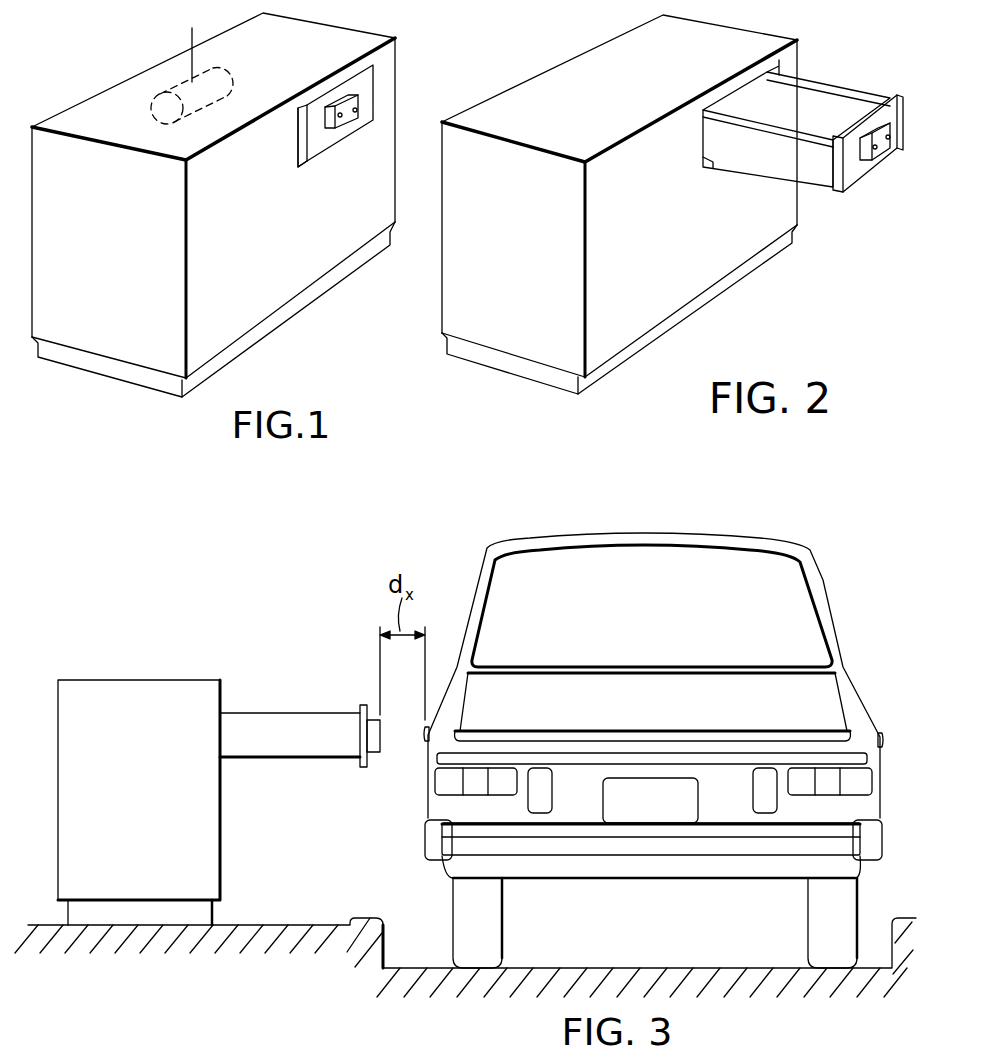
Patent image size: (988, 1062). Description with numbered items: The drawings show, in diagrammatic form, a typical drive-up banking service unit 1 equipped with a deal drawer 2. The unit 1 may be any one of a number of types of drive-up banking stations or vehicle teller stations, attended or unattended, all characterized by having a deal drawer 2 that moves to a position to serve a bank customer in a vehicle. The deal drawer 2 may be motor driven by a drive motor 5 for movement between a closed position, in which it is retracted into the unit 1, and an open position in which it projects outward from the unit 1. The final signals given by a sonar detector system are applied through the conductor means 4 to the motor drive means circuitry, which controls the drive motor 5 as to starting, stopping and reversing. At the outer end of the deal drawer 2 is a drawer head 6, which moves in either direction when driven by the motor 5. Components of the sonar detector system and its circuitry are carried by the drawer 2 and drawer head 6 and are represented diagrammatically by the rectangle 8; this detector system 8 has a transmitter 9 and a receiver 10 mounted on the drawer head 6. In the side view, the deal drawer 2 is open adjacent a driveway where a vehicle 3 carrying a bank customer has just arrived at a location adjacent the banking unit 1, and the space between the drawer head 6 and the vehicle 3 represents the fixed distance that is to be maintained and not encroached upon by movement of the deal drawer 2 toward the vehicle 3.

In FIG. 1, the banking service unit 1 is at (128, 396).
In FIG. 2, the banking service unit 1 is at (763, 278).
In FIG. 3, the banking service unit 1 is at (140, 672).
In FIG. 1, the deal drawer 2 is at (297, 142).
In FIG. 2, the deal drawer 2 is at (772, 157).
In FIG. 3, the deal drawer 2 is at (277, 740).
In FIG. 3, the vehicle 3 is at (847, 620).
In FIG. 1, the conductor means 4 is at (192, 28).
In FIG. 1, the drive motor 5 is at (165, 88).
In FIG. 1, the drawer head 6 is at (320, 140).
In FIG. 2, the drawer head 6 is at (852, 168).
In FIG. 3, the drawer head 6 is at (362, 705).
In FIG. 1, the detector system 8 is at (358, 118).
In FIG. 2, the detector system 8 is at (884, 150).
In FIG. 3, the detector system 8 is at (372, 757).
In FIG. 1, the transmitter 9 is at (340, 112).
In FIG. 2, the transmitter 9 is at (873, 140).
In FIG. 1, the receiver 10 is at (357, 108).
In FIG. 2, the receiver 10 is at (890, 135).